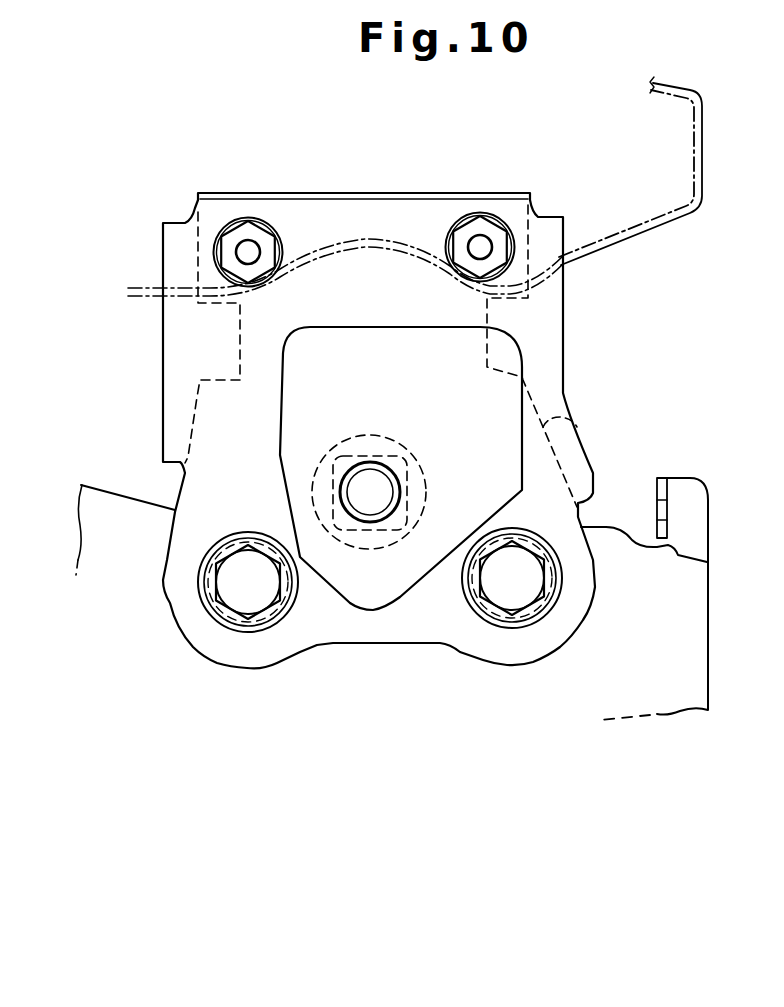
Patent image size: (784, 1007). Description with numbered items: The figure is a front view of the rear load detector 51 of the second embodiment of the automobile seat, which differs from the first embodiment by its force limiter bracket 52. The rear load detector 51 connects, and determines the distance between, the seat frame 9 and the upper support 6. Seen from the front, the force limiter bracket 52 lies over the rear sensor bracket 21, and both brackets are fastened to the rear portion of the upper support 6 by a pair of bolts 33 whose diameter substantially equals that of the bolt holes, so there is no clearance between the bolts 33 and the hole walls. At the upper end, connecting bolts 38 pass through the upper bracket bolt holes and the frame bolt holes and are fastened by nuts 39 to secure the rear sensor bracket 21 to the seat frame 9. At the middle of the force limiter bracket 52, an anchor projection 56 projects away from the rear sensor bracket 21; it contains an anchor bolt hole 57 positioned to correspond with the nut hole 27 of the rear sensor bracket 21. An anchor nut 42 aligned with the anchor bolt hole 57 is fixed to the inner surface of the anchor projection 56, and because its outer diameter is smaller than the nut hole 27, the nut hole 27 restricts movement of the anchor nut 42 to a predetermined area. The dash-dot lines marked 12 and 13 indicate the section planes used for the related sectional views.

The upper support 6 is at (707, 642).
The seat frame 9 is at (702, 170).
The section line 12 is at (248, 180).
The section line 13 is at (368, 180).
The rear sensor bracket 21 is at (578, 427).
The nut hole 27 is at (385, 442).
The bolt 33 is at (242, 570).
The connecting bolt 38 is at (240, 238).
The nut 39 is at (258, 237).
The anchor nut 42 is at (376, 548).
The rear load detector 51 is at (593, 313).
The force limiter bracket 52 is at (163, 357).
The anchor projection 56 is at (360, 342).
The anchor bolt hole 57 is at (385, 487).